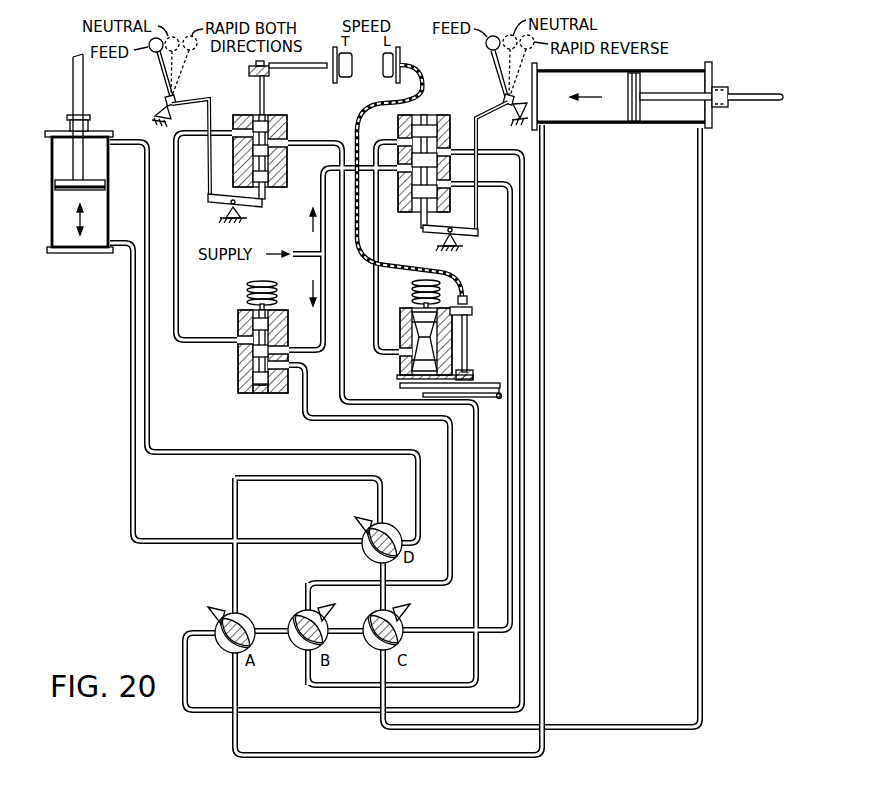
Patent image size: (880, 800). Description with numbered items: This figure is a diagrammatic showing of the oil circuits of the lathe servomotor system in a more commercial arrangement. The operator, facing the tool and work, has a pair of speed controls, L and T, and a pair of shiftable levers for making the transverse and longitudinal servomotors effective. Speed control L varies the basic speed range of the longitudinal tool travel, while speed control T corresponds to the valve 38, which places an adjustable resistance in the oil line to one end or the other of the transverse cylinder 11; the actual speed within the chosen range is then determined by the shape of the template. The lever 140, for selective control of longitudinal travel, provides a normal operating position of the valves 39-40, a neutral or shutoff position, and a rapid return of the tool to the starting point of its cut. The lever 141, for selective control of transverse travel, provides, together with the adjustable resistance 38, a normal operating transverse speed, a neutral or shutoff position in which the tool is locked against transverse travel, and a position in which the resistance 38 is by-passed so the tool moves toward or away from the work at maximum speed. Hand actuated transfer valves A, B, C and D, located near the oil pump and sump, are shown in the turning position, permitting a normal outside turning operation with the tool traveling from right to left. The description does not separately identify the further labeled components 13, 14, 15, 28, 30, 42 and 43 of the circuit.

The transverse cylinder 11 is at (74, 174).
The transverse piston rod 13 is at (73, 87).
The longitudinal cylinder 14 is at (657, 116).
The longitudinal piston rod 15 is at (748, 101).
The transverse control valve 28 is at (228, 386).
The longitudinal control valve 30 is at (498, 348).
The valve 38 is at (313, 123).
The valves 39-40 is at (398, 213).
The longitudinal cylinder pipe 42 is at (547, 308).
The longitudinal cylinder pipe 43 is at (706, 314).
The lever 140 is at (500, 67).
The lever 141 is at (160, 71).